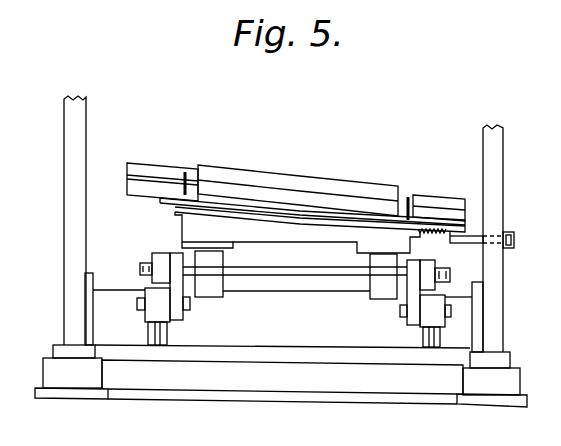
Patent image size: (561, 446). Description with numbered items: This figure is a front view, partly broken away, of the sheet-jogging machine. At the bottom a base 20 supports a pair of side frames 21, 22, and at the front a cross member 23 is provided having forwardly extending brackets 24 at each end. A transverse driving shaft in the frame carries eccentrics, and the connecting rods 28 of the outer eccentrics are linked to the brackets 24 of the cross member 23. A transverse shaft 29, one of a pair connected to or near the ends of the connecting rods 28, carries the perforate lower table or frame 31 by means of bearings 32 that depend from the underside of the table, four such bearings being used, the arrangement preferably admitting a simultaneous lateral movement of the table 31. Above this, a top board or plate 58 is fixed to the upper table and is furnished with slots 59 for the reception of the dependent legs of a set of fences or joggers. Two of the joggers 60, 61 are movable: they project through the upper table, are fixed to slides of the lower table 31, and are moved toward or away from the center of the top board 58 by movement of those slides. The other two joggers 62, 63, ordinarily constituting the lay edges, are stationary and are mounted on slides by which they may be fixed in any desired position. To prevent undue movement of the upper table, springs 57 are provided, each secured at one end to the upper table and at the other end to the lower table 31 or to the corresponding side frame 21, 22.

The base 20 is at (176, 382).
The side frame 21 is at (500, 157).
The side frame 22 is at (71, 123).
The cross member 23 is at (310, 333).
The bracket 24 is at (147, 335).
The connecting rod 28 is at (162, 262).
The transverse shaft 29 is at (287, 276).
The perforate table 31 is at (263, 232).
The bearing 32 is at (212, 290).
The spring 57 is at (421, 233).
The top board 58 is at (137, 171).
The slot 59 is at (127, 177).
The movable jogger 60 is at (244, 172).
The movable jogger 61 is at (186, 172).
The stationary jogger 62 is at (345, 195).
The stationary jogger 63 is at (410, 197).